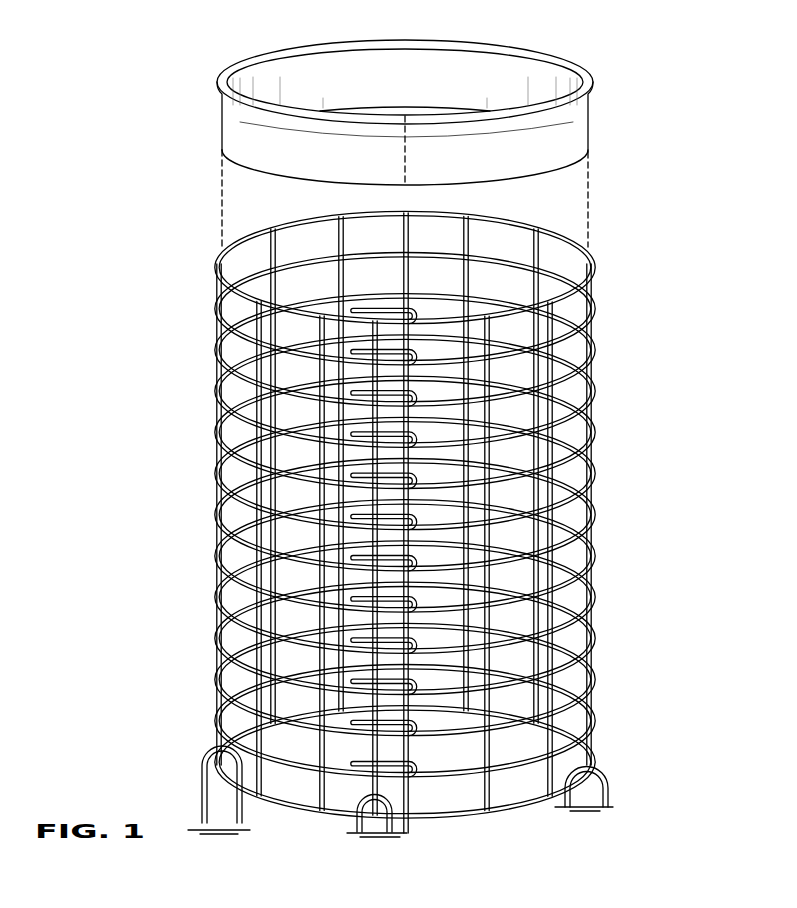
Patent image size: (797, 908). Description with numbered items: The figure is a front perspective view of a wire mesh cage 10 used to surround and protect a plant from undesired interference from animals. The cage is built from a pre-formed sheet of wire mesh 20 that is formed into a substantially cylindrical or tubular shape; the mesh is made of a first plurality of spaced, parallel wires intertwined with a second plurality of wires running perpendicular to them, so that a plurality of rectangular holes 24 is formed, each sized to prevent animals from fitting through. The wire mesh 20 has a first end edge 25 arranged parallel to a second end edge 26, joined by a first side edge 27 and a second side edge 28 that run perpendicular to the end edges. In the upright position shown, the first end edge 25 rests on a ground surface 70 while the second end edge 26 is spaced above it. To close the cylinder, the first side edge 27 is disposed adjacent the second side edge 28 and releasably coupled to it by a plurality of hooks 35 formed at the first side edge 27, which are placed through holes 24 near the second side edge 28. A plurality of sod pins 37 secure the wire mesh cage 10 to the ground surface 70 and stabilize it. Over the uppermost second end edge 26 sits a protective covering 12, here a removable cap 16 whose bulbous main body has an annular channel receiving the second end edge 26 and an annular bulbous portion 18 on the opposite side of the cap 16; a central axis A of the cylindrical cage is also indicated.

The wire mesh cage 10 is at (140, 320).
The protective covering 12 is at (622, 56).
The removable cap 16 is at (588, 122).
The annular bulbous portion 18 is at (480, 42).
The central axis A is at (405, 152).
The wire mesh 20 is at (217, 300).
The holes 24 is at (505, 792).
The first end edge 25 is at (270, 810).
The second end edge 26 is at (592, 254).
The first side edge 27 is at (412, 797).
The second side edge 28 is at (368, 752).
The hooks 35 is at (388, 637).
The sod pins 37 is at (202, 771).
The ground surface 70 is at (232, 869).